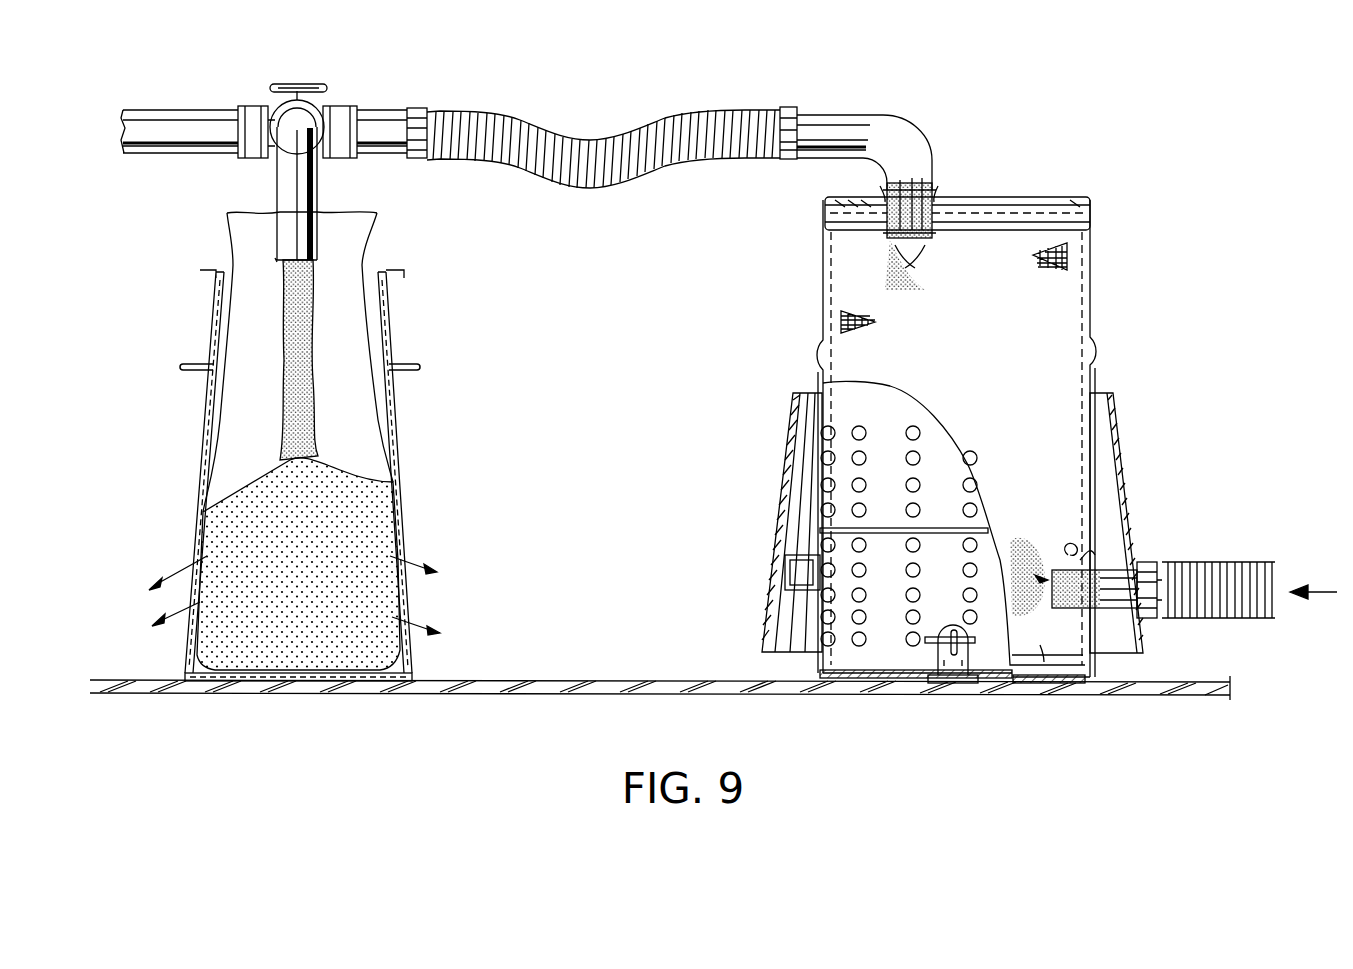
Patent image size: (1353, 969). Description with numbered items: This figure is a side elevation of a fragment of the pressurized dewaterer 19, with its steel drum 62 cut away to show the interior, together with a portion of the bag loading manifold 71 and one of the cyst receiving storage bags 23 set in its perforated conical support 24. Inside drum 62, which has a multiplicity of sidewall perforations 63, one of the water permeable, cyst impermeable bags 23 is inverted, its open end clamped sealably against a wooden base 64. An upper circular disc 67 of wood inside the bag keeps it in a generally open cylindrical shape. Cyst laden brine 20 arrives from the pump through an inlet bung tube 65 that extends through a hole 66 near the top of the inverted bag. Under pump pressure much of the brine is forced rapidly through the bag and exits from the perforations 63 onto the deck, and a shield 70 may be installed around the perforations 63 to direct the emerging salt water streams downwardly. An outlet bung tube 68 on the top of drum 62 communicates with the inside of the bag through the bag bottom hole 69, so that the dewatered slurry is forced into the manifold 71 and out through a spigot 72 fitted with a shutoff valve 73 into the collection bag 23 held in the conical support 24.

The pressurized dewaterer 19 is at (1090, 310).
The cyst containing brine 20 is at (1045, 648).
The cyst storage bag 23 is at (237, 462).
The perforated conical support 24 is at (205, 521).
The steel drum 62 is at (1092, 338).
The sidewall perforations 63 is at (833, 485).
The wooden base 64 is at (907, 695).
The inlet bung tube 65 is at (1103, 682).
The hole 66 is at (1085, 556).
The upper circular disc 67 is at (1048, 237).
The outlet bung tube 68 is at (900, 196).
The bag bottom hole 69 is at (965, 230).
The shield 70 is at (1125, 495).
The manifold 71 is at (348, 109).
The spigot 72 is at (277, 182).
The shutoff valve 73 is at (301, 96).